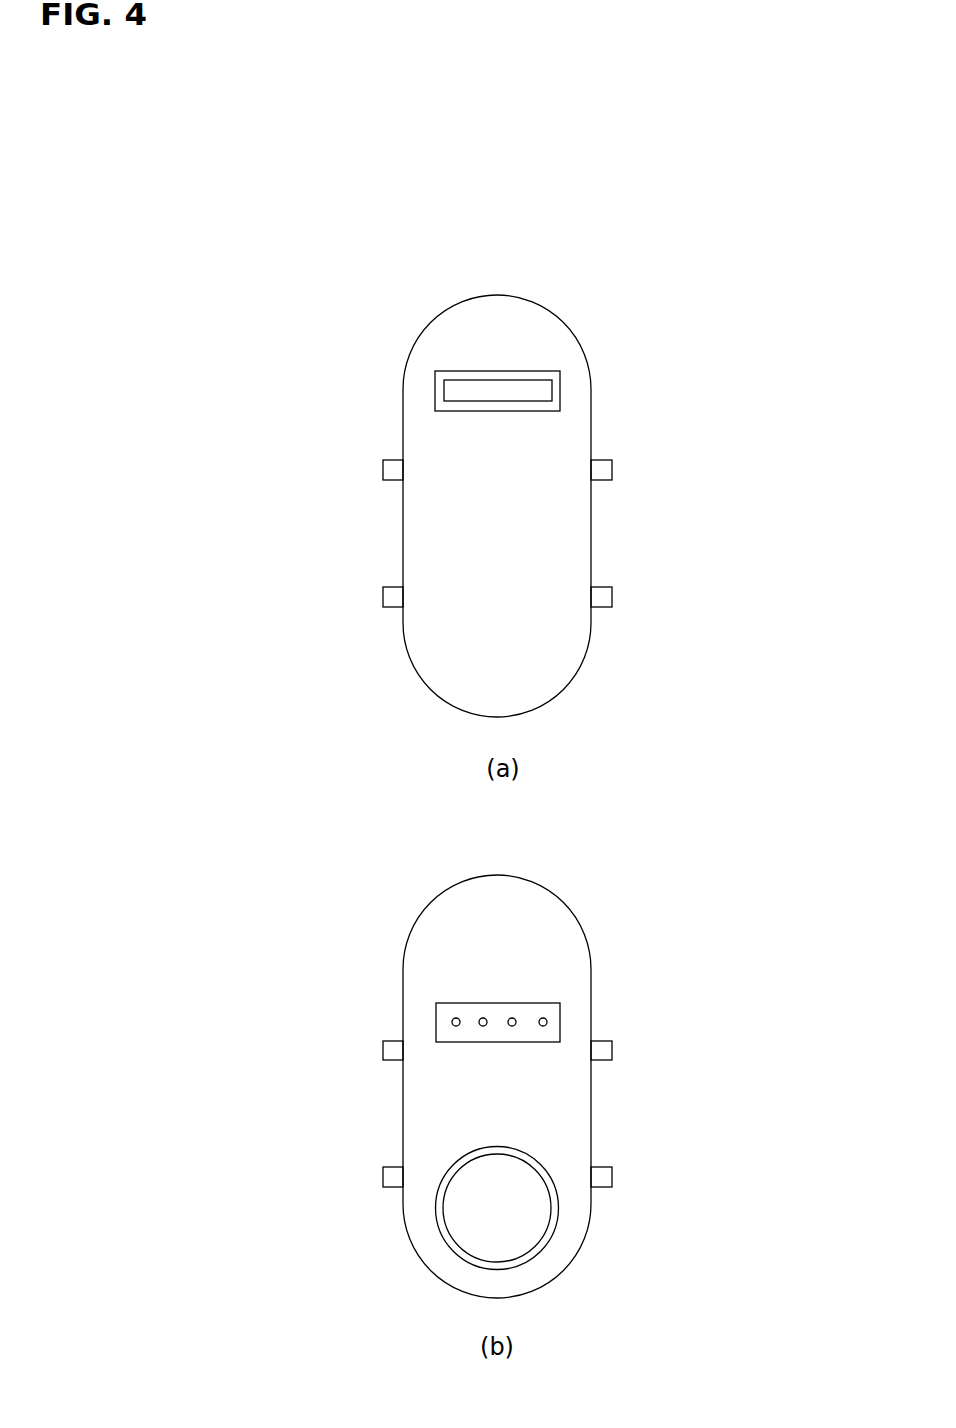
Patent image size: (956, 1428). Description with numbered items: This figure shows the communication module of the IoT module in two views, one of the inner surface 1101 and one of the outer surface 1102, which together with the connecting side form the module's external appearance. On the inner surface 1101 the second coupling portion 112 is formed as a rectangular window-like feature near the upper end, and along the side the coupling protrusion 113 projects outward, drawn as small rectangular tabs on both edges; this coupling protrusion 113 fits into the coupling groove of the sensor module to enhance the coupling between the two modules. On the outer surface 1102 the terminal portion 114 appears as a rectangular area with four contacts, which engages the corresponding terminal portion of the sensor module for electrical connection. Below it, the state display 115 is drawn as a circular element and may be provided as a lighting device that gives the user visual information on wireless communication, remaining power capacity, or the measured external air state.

The inner surface 1101 is at (443, 562).
The outer surface 1102 is at (572, 1125).
The second coupling portion 112 is at (503, 388).
The coupling protrusion 113 is at (383, 470).
The terminal portion 114 is at (472, 1010).
The state display 115 is at (542, 1245).